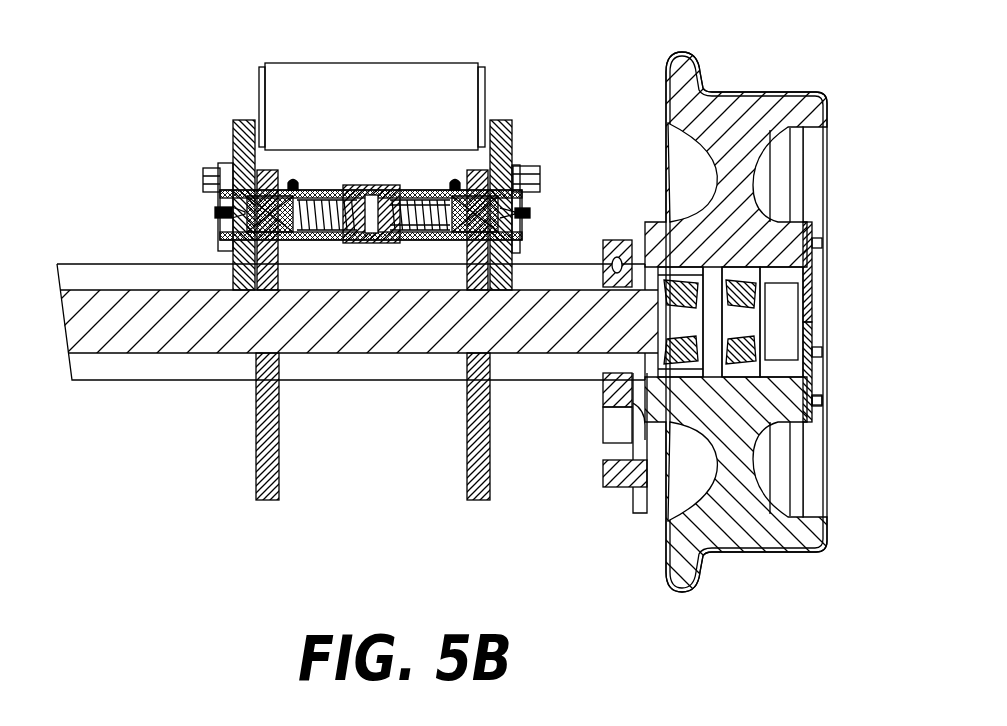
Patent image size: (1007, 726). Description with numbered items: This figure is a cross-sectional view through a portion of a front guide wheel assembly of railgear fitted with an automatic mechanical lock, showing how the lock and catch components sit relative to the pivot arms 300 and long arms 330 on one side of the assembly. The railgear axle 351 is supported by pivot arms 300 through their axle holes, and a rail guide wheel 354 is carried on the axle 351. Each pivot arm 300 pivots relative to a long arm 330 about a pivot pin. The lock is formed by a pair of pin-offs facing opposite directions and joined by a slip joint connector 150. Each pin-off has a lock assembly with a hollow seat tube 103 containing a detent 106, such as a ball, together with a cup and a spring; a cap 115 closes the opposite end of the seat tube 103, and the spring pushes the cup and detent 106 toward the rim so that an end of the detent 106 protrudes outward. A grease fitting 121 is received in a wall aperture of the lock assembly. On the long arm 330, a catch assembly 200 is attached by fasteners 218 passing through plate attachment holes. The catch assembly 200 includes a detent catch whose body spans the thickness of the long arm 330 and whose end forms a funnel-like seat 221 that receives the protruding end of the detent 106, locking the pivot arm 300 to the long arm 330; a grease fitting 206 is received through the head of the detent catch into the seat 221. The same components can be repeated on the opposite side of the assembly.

The rail guide wheel 354 is at (753, 54).
The long arm 330 is at (233, 138).
The catch assembly 200 is at (381, 200).
The slip joint connector 150 is at (371, 190).
The seat tube 103 is at (413, 196).
The grease fitting 121 is at (454, 178).
The fastener 218 is at (540, 179).
The grease fitting 206 is at (530, 214).
The seat 221 is at (523, 238).
The cap 115 is at (382, 243).
The detent 106 is at (458, 237).
The axle 351 is at (159, 353).
The pivot arm 300 is at (280, 460).